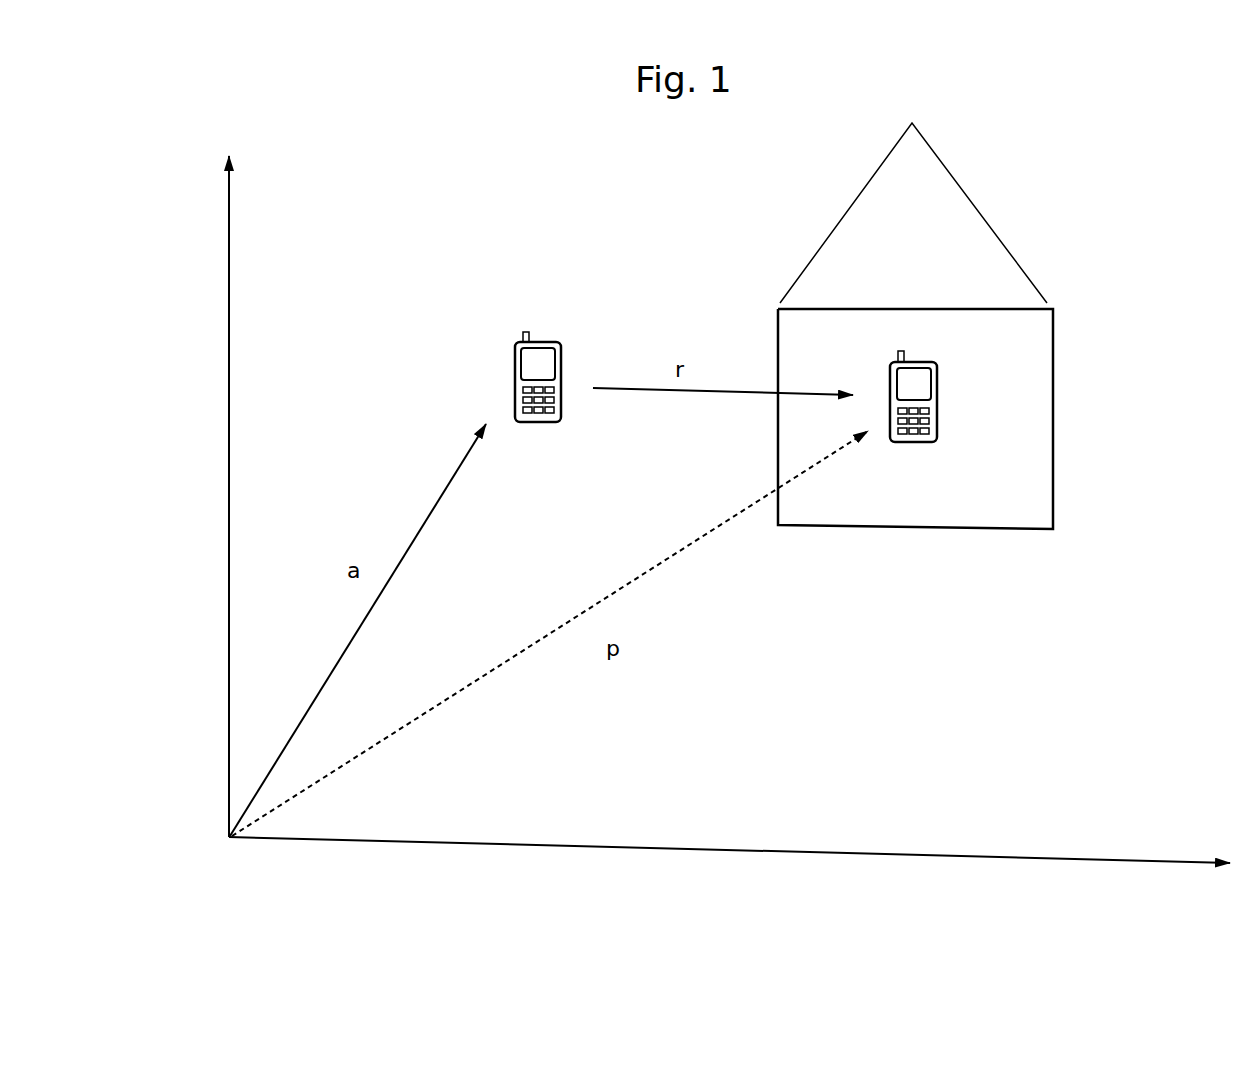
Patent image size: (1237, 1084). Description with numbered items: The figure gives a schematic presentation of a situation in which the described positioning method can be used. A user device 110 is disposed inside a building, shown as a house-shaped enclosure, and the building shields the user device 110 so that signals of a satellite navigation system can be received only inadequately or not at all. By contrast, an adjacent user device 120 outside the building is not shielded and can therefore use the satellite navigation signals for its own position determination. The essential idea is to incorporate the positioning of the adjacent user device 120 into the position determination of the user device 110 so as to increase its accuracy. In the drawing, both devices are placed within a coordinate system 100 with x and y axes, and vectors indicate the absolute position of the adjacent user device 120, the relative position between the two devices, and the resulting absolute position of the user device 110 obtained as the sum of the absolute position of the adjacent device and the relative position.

The coordinate system 100 is at (222, 903).
The user device 110 is at (915, 444).
The adjacent user device 120 is at (542, 424).